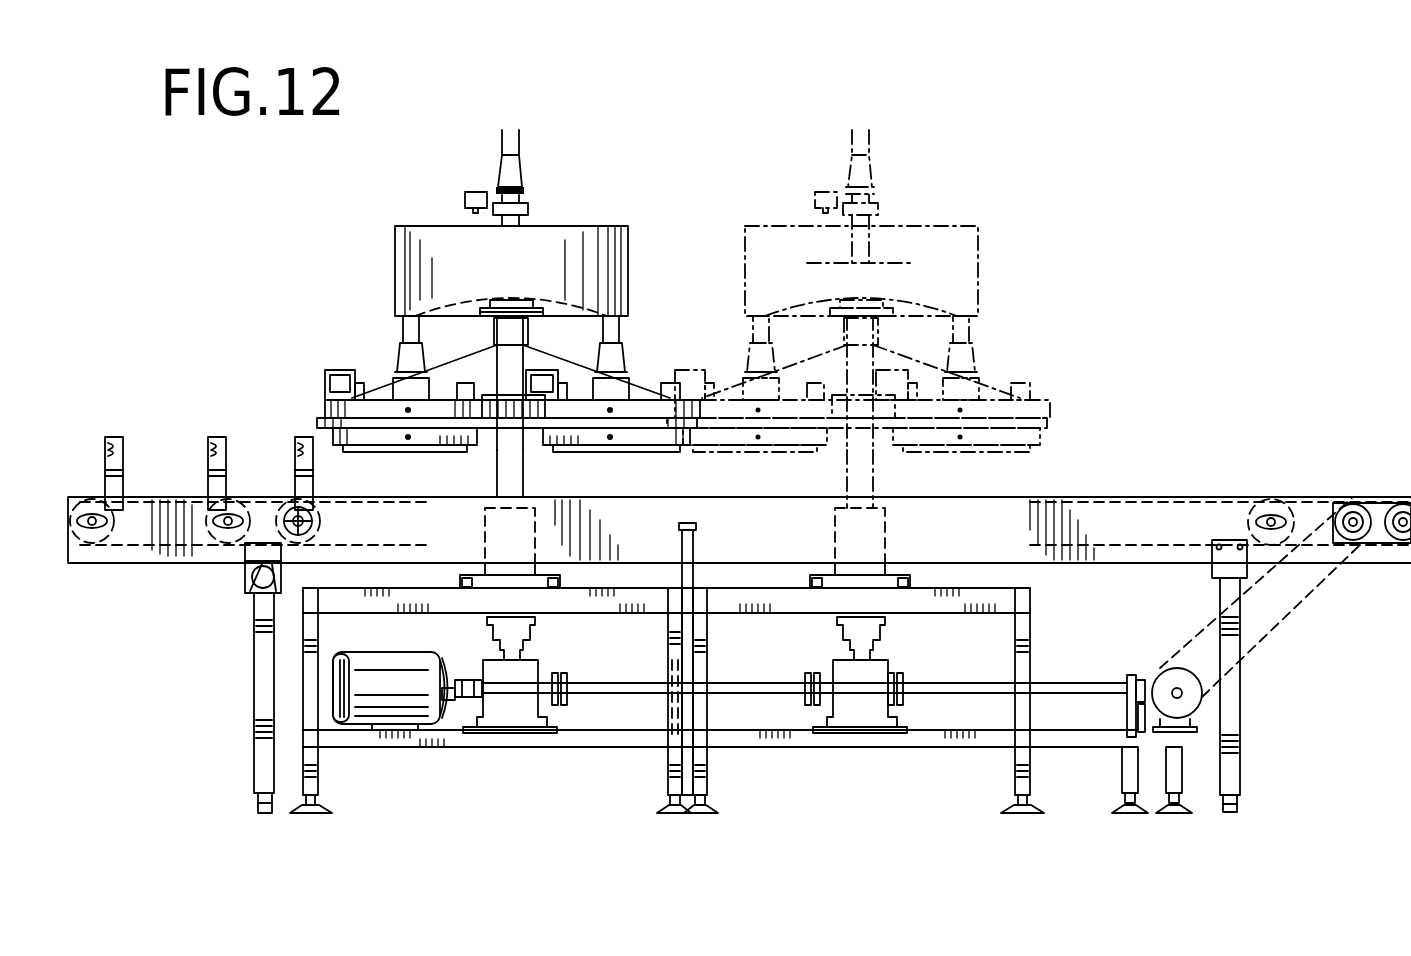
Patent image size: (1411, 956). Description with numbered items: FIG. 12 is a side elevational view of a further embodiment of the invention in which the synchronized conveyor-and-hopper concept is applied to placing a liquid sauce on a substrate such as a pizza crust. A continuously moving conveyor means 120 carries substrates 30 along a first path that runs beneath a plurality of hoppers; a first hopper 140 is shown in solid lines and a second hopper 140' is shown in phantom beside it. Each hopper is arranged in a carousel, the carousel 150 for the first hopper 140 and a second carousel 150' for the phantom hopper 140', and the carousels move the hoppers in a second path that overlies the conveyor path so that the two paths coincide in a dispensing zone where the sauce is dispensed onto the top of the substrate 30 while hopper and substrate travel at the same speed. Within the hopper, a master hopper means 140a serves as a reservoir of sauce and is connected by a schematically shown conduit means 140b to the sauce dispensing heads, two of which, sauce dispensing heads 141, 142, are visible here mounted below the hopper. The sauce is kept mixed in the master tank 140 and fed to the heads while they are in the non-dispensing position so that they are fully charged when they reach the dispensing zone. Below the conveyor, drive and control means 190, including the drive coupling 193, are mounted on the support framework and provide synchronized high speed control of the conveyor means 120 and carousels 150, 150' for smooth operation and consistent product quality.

The substrate 30 is at (266, 496).
The conveyor means 120 is at (387, 498).
The hopper 140 is at (452, 313).
The hopper 140' is at (928, 319).
The master hopper means 140a is at (567, 243).
The conduit means 140b is at (592, 310).
The sauce dispensing head 141 is at (440, 433).
The sauce dispensing head 142 is at (587, 433).
The carousel 150 is at (463, 397).
The carousel 150' is at (882, 375).
The drive and control means 190 is at (423, 710).
The gear reducer coupling 193 is at (388, 675).